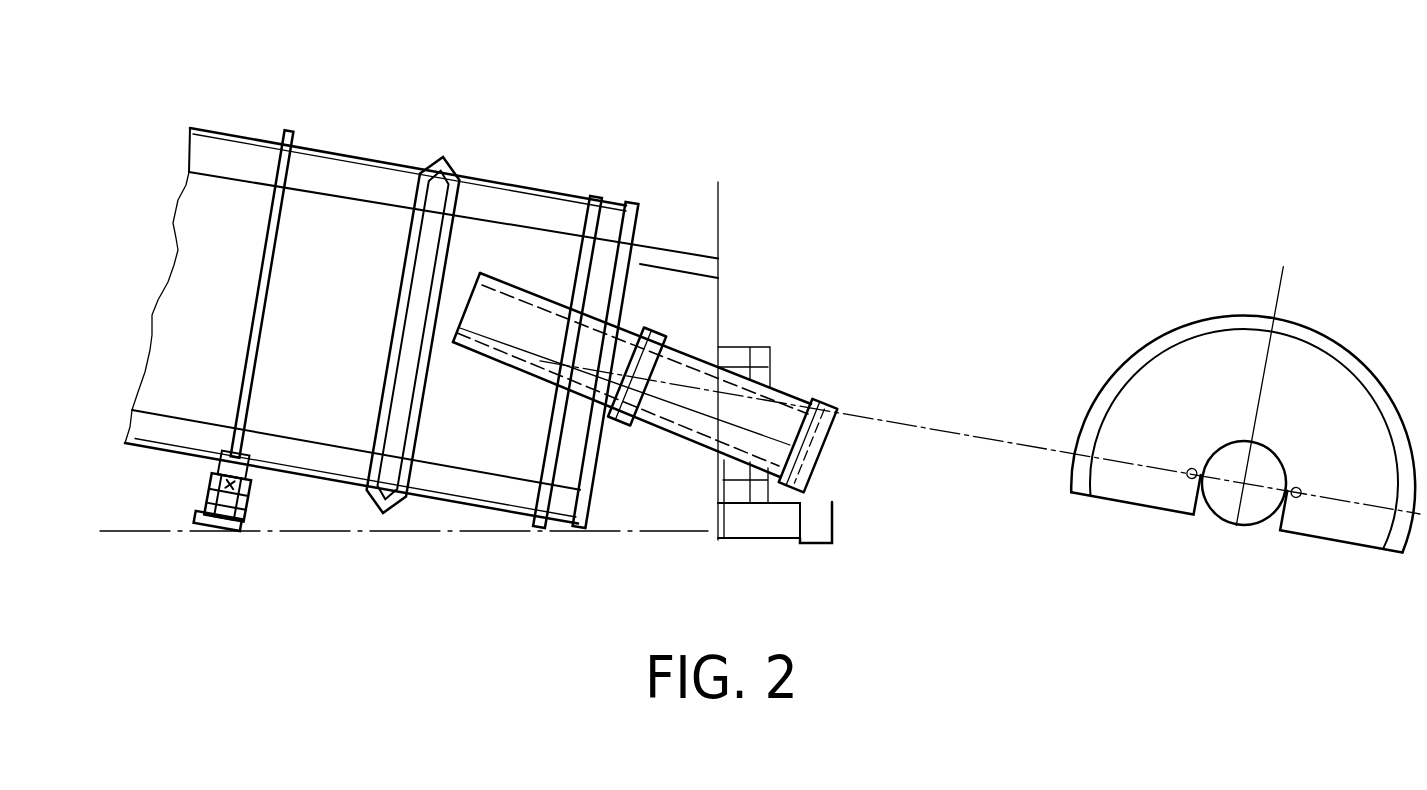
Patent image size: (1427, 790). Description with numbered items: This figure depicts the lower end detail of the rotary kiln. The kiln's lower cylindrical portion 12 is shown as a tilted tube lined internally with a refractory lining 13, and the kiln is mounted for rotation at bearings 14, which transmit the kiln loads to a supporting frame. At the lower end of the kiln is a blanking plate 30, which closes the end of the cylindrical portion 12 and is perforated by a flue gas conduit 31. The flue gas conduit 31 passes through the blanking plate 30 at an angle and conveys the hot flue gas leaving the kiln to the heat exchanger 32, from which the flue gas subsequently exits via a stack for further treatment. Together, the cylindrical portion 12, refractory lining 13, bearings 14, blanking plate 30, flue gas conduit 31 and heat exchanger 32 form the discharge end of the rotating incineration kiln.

The cylindrical portion 12 is at (315, 205).
The refractory lining 13 is at (497, 203).
The bearings 14 is at (205, 510).
The blanking plate 30 is at (645, 220).
The flue gas conduit 31 is at (687, 360).
The heat exchanger 32 is at (732, 525).